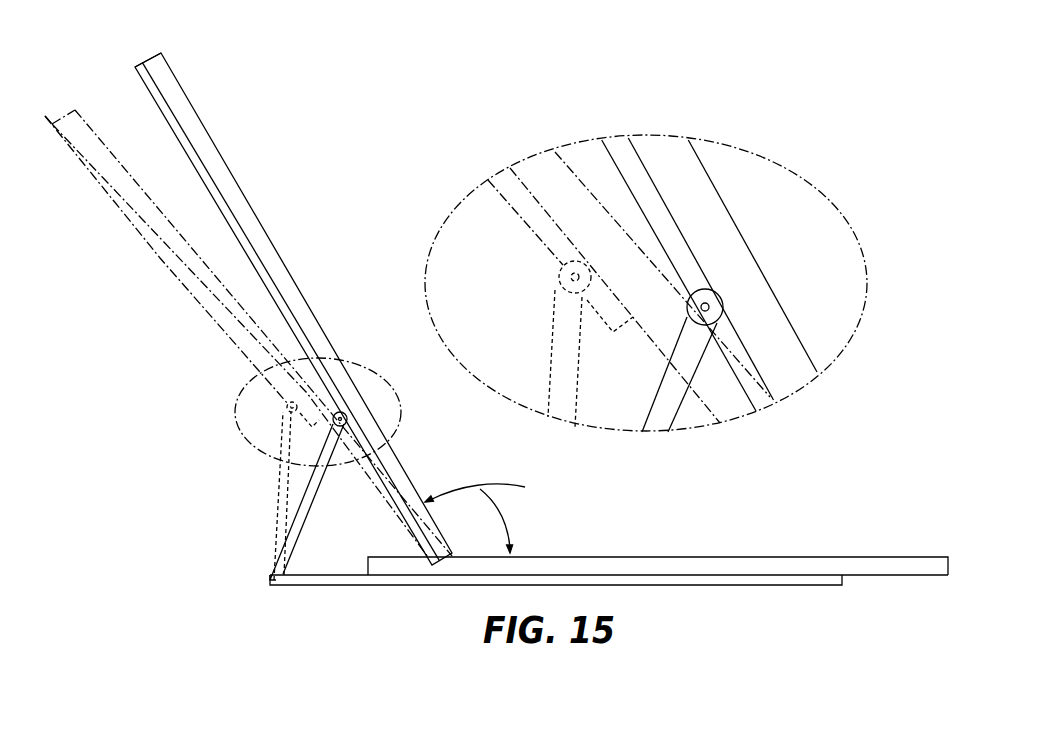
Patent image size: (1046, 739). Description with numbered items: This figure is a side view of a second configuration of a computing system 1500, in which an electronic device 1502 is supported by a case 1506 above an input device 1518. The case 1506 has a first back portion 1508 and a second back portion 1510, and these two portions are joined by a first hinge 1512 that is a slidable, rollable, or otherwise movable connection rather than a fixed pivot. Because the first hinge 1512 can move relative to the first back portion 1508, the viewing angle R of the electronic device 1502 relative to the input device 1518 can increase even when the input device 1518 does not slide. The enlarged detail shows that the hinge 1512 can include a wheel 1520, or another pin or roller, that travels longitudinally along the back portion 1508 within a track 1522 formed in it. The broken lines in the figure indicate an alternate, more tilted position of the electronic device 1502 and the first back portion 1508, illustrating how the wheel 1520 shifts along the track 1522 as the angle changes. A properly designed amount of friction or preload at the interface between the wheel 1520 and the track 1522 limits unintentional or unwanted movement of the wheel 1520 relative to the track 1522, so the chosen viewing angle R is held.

The computing system 1500 is at (848, 128).
The electronic device 1502 is at (236, 182).
The case 1506 is at (266, 580).
The first back portion 1508 is at (147, 93).
The second back portion 1510 is at (305, 523).
The first hinge 1512 is at (347, 413).
The input device 1518 is at (876, 556).
The wheel 1520 is at (726, 309).
The track 1522 is at (672, 220).
The viewing angle R is at (487, 513).